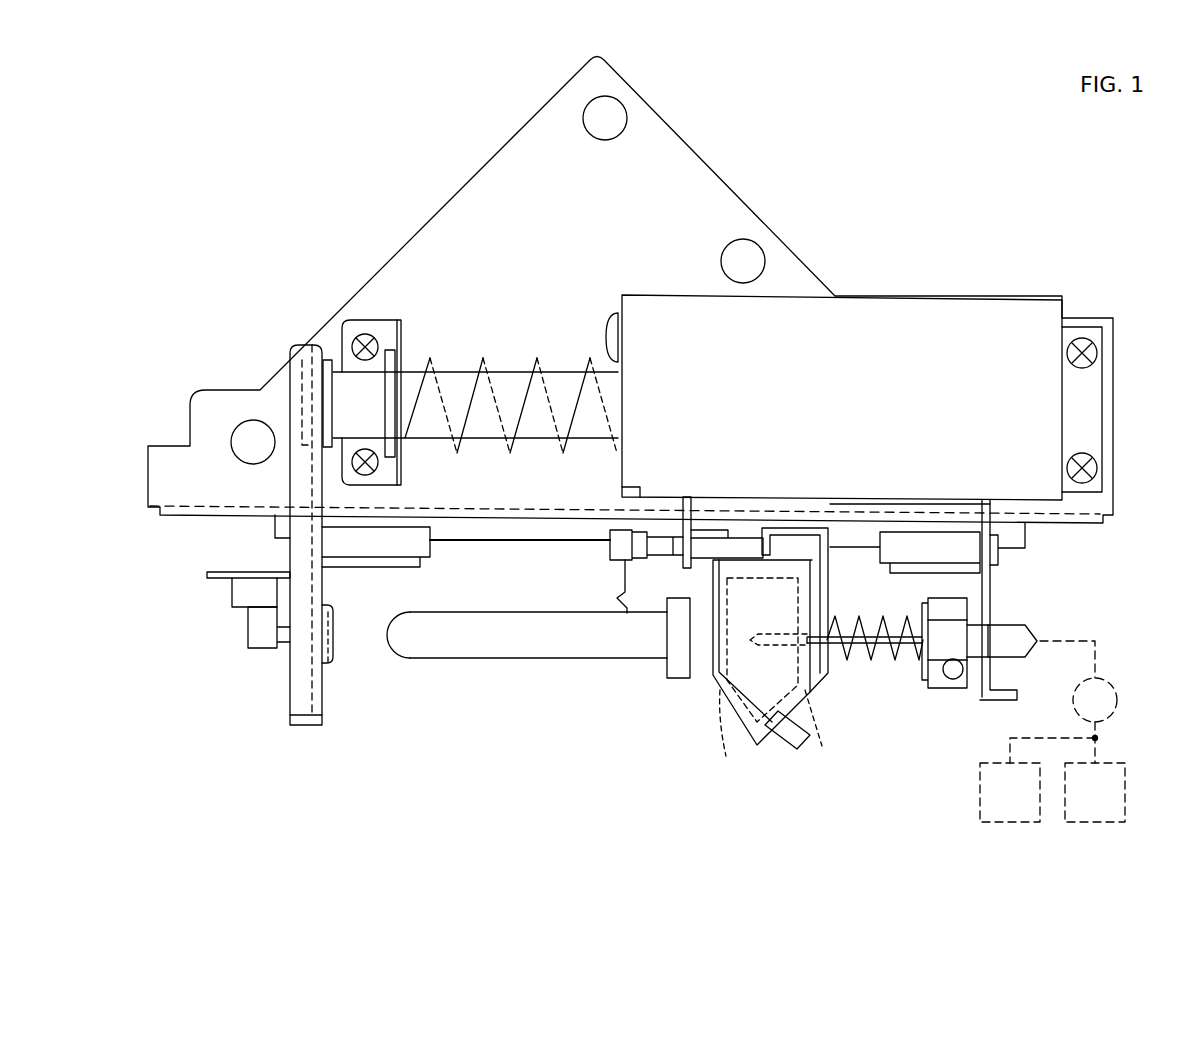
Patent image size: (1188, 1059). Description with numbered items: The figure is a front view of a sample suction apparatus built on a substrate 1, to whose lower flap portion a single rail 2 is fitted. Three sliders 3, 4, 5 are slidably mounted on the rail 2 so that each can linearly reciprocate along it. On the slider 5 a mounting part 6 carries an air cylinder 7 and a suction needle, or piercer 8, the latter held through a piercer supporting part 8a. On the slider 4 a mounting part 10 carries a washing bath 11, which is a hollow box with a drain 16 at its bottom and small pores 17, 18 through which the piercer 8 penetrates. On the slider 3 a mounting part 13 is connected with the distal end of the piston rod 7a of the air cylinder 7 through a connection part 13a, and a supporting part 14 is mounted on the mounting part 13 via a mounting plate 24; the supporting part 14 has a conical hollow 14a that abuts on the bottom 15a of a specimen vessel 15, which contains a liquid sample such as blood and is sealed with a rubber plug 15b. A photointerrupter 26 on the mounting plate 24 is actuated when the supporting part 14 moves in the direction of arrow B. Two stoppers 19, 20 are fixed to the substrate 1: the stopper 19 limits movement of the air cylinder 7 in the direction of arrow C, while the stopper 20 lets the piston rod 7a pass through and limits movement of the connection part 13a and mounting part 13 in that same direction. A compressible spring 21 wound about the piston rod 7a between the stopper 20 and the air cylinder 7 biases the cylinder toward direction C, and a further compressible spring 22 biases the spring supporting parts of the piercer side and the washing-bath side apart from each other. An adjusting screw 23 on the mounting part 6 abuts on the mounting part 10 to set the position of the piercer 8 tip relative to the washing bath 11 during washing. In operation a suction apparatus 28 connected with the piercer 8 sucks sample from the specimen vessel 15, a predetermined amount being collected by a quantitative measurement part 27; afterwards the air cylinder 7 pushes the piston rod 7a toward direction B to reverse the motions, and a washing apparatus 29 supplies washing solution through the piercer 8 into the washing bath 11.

The substrate 1 is at (702, 192).
The rail 2 is at (517, 540).
The slider 3 is at (423, 548).
The slider 4 is at (612, 553).
The slider 5 is at (888, 555).
The mounting part 6 is at (985, 580).
The air cylinder 7 is at (995, 318).
The piston rod 7a is at (512, 385).
The piercer 8 is at (878, 652).
The piercer supporting part 8a is at (948, 690).
The mounting part 10 is at (712, 690).
The washing bath 11 is at (812, 660).
The mounting part 13 is at (303, 695).
The connection part 13a is at (328, 338).
The supporting part 14 is at (327, 660).
The conical hollow 14a is at (337, 630).
The specimen vessel 15 is at (520, 657).
The bottom of specimen vessel 15a is at (382, 640).
The rubber plug 15b is at (667, 663).
The drain 16 is at (793, 749).
The small pore 17 is at (822, 731).
The small pore 18 is at (728, 735).
The stopper 19 is at (1088, 397).
The stopper 20 is at (358, 332).
The compressible spring 21 is at (437, 356).
The compressible spring 22 is at (878, 622).
The adjusting screw 23 is at (642, 555).
The mounting plate 24 is at (253, 572).
The photointerrupter 26 is at (258, 628).
The quantitative measurement part 27 is at (1108, 692).
The suction apparatus 28 is at (980, 800).
The washing apparatus 29 is at (1125, 795).